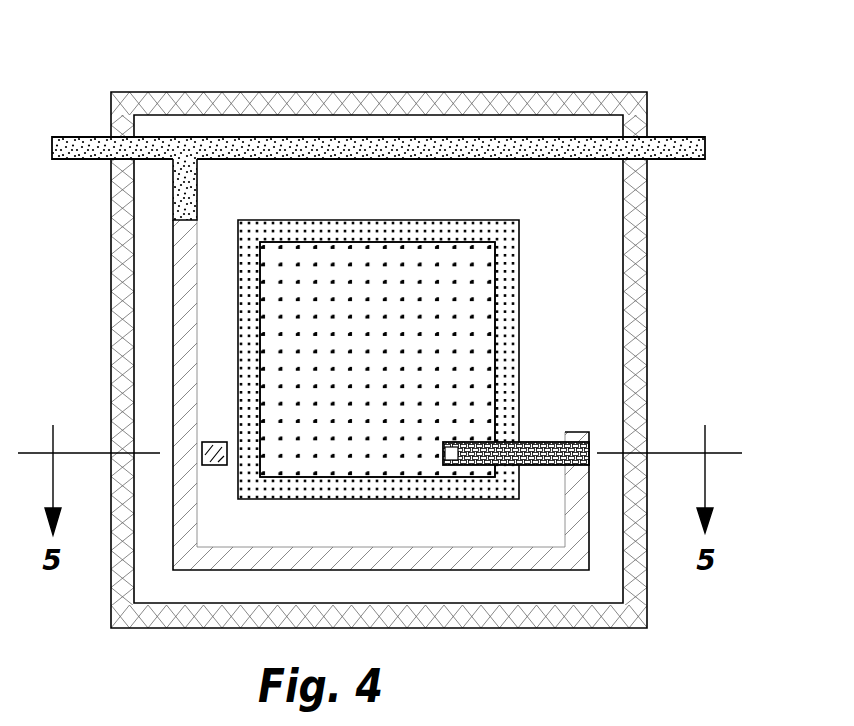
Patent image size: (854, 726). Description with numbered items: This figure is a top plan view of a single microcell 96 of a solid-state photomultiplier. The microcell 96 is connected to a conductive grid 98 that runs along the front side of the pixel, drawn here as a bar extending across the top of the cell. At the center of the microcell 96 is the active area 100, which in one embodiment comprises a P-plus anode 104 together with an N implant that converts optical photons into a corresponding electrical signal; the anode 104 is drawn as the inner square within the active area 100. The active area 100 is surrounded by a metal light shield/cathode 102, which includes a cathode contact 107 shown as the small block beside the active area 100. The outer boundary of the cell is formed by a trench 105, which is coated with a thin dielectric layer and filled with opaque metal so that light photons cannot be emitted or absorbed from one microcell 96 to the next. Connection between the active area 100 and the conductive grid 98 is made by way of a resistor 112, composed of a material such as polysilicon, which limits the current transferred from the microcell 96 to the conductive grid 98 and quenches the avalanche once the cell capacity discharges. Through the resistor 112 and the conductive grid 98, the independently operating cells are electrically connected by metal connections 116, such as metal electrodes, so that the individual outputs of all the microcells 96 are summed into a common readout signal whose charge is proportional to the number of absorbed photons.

The microcell 96 is at (414, 326).
The conductive grid 98 is at (707, 143).
The active area 100 is at (520, 254).
The 'P+' anode 104 is at (512, 317).
The trench 105 is at (647, 245).
The metal light shield/cathode 102 is at (592, 327).
The resistor 112 is at (180, 327).
The cathode contact 107 is at (220, 441).
The metal connection 116 is at (543, 442).